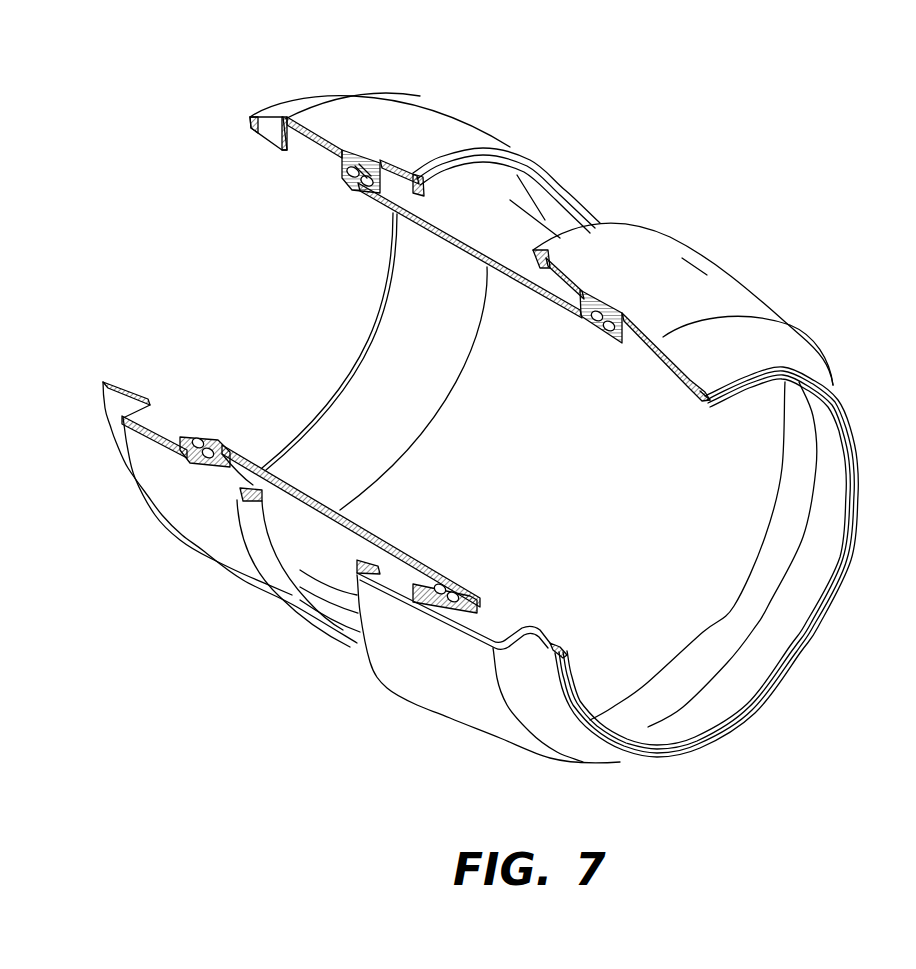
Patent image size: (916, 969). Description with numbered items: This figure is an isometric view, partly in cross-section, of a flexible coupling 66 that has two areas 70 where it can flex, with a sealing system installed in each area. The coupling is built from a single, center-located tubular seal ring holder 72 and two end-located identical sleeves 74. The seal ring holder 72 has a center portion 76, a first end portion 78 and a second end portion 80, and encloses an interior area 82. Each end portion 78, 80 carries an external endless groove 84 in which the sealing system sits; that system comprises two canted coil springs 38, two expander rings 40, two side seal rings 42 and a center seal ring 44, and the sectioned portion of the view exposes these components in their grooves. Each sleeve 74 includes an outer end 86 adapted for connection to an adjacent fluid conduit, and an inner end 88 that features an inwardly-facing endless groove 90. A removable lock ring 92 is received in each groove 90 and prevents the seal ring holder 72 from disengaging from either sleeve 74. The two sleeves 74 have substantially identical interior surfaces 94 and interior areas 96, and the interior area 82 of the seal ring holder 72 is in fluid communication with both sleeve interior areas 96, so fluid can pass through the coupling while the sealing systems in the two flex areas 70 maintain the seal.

The flexible coupling 66 is at (122, 609).
The canted coil spring 38 is at (217, 447).
The expander ring 40 is at (610, 331).
The side seal ring 42 is at (354, 166).
The center seal ring 44 is at (362, 168).
The area 70 is at (304, 160).
The tubular seal ring holder 72 is at (498, 227).
The sleeve 74 is at (330, 112).
The center portion 76 is at (337, 553).
The first end portion 78 is at (336, 188).
The second end portion 80 is at (474, 615).
The interior area 82 is at (516, 514).
The external endless groove 84 is at (195, 440).
The outer end 86 is at (250, 120).
The inner end 88 is at (560, 172).
The inwardly-facing endless groove 90 is at (243, 504).
The removable lock ring 92 is at (262, 492).
The interior surface 94 is at (165, 430).
The interior area 96 is at (198, 217).